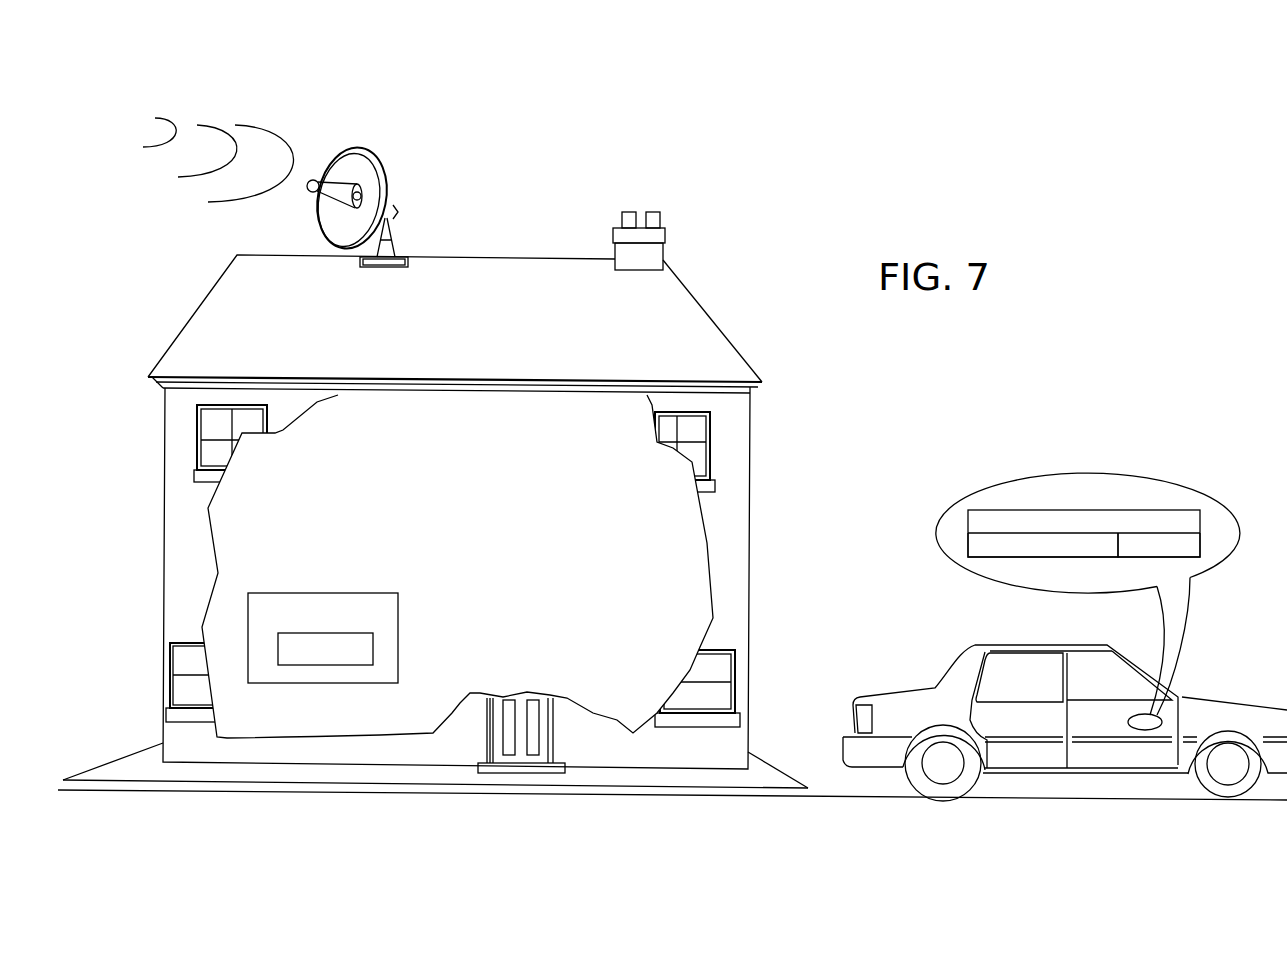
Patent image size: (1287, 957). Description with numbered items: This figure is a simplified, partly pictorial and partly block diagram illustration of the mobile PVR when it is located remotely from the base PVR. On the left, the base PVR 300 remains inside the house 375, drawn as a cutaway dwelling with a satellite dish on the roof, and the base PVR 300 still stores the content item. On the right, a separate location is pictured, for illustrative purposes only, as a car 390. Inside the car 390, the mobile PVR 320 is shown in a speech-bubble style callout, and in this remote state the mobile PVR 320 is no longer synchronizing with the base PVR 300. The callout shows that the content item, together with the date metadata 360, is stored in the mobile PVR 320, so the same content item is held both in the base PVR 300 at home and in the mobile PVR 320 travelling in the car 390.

The house 375 is at (723, 328).
The base PVR 300 is at (297, 593).
The mobile PVR 320 is at (980, 511).
The date metadata 360 is at (1020, 557).
The car 390 is at (1235, 697).